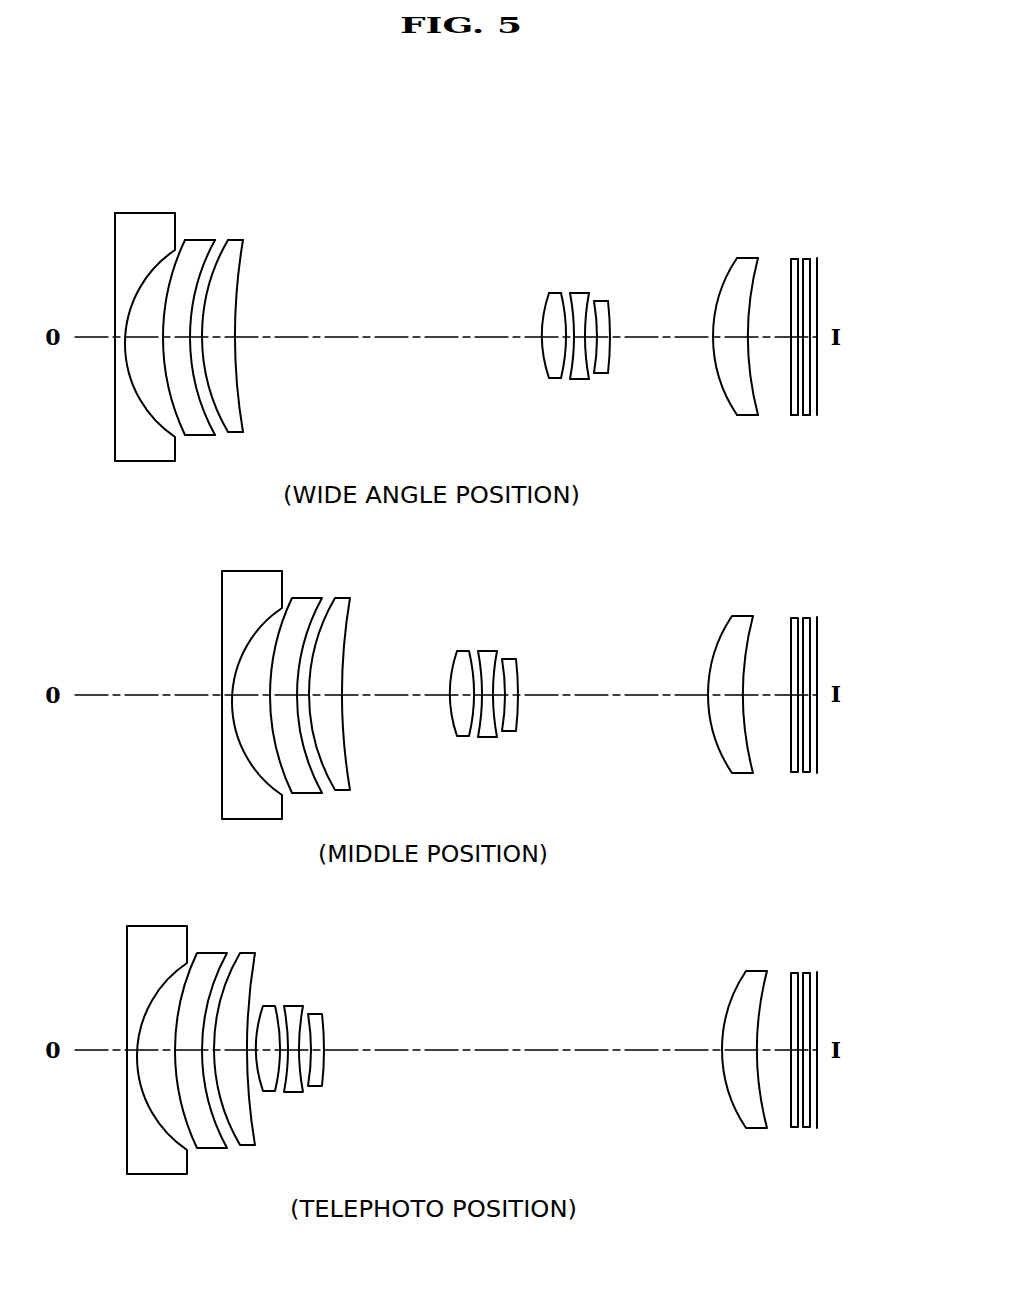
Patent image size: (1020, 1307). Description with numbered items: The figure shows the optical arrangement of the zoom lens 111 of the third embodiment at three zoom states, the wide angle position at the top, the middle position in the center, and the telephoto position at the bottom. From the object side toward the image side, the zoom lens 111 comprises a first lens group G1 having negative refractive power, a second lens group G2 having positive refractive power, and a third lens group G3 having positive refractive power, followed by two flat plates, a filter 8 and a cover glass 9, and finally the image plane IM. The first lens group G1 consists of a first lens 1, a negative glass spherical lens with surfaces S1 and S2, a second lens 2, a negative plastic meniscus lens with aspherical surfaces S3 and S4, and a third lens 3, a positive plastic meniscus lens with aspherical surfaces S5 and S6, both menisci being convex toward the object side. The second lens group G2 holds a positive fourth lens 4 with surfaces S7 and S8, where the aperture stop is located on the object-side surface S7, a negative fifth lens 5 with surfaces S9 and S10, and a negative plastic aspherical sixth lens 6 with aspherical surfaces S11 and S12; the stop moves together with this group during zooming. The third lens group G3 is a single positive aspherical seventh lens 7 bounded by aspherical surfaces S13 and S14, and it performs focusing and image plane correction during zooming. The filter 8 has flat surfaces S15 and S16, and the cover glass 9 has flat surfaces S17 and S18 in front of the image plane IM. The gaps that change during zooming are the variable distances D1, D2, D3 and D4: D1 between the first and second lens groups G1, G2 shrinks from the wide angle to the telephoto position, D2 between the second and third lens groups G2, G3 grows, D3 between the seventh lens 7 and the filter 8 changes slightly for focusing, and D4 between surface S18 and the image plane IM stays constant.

The zoom lens 111 is at (408, 136).
The first lens group G1 is at (118, 139).
The second lens group G2 is at (608, 139).
The third lens group G3 is at (757, 139).
The first lens 1 is at (125, 339).
The second lens 2 is at (180, 327).
The third lens 3 is at (243, 327).
The fourth lens 4 is at (514, 340).
The fifth lens 5 is at (588, 323).
The sixth lens 6 is at (635, 356).
The seventh lens 7 is at (730, 340).
The filter 8 is at (811, 338).
The cover glass 9 is at (850, 365).
The image plane IM is at (818, 417).
The first lens surface S1 is at (115, 258).
The second lens surface S2 is at (148, 270).
The third lens surface S3 is at (175, 263).
The fourth lens surface S4 is at (203, 265).
The fifth lens surface S5 is at (226, 262).
The sixth lens surface S6 is at (238, 283).
The seventh lens surface S7 is at (546, 308).
The eighth lens surface S8 is at (560, 300).
The ninth lens surface S9 is at (572, 297).
The tenth lens surface S10 is at (587, 300).
The eleventh lens surface S11 is at (596, 306).
The twelfth lens surface S12 is at (608, 318).
The thirteenth lens surface S13 is at (720, 292).
The fourteenth lens surface S14 is at (753, 282).
The fifteenth surface S15 is at (791, 288).
The sixteenth surface S16 is at (798, 284).
The seventeenth surface S17 is at (804, 297).
The eighteenth surface S18 is at (810, 316).
The first variable distance D1 is at (386, 338).
The second variable distance D2 is at (667, 338).
The third variable distance D3 is at (773, 340).
The fourth variable distance D4 is at (818, 340).